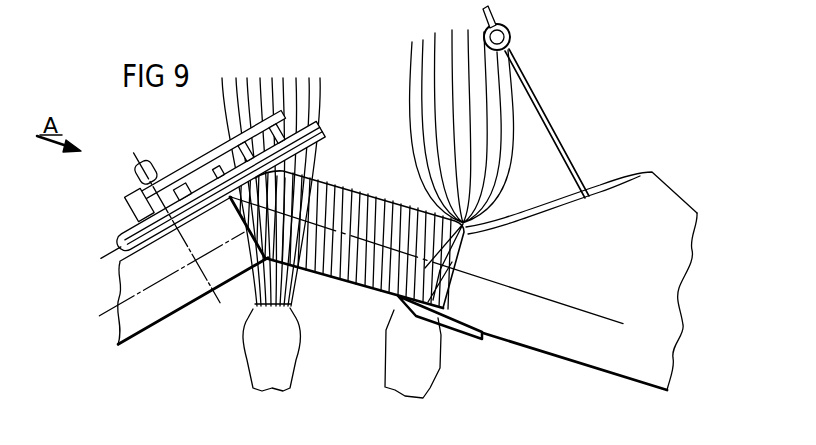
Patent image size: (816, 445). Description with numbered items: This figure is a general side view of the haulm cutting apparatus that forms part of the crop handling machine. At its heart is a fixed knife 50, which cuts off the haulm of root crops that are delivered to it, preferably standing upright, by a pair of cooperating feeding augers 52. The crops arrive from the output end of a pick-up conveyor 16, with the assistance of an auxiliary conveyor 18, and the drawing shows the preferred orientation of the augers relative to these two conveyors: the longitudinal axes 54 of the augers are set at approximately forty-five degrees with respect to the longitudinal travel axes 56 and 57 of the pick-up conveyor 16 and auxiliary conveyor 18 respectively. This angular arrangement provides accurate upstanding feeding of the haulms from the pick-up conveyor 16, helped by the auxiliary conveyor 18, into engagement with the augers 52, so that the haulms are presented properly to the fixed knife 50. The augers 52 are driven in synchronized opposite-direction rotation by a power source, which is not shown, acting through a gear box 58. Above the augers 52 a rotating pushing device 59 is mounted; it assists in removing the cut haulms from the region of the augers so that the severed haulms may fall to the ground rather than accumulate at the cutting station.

The pick-up conveyor 16 is at (156, 323).
The auxiliary conveyor 18 is at (320, 125).
The fixed knife 50 is at (408, 299).
The cooperating feeding augers 52 is at (368, 198).
The longitudinal axes of the augers 54 is at (318, 173).
The longitudinal travel axis of pick-up conveyor 56 is at (101, 317).
The longitudinal travel axis of auxiliary conveyor 57 is at (120, 247).
The gear box 58 is at (517, 311).
The rotating pushing device 59 is at (543, 120).